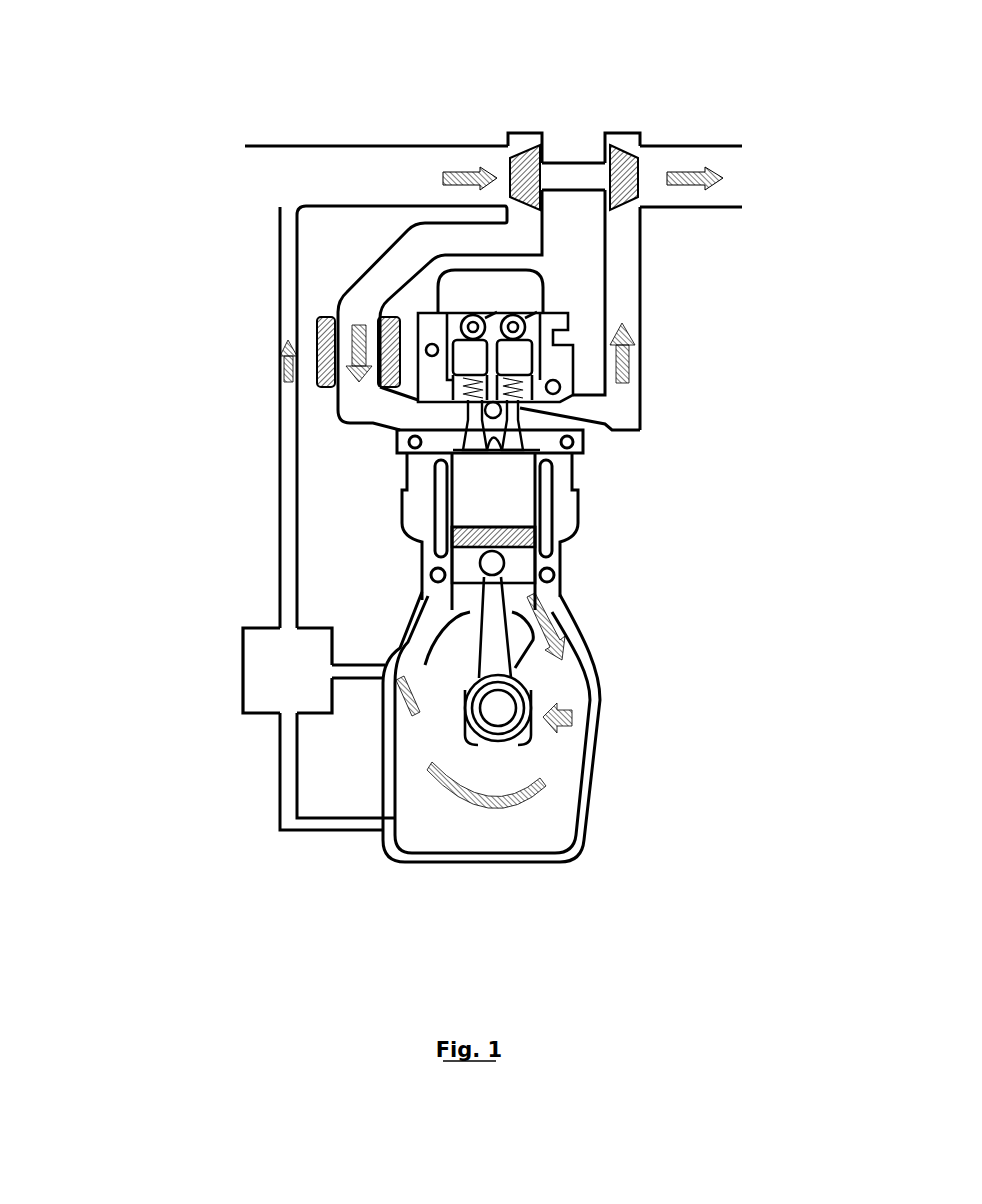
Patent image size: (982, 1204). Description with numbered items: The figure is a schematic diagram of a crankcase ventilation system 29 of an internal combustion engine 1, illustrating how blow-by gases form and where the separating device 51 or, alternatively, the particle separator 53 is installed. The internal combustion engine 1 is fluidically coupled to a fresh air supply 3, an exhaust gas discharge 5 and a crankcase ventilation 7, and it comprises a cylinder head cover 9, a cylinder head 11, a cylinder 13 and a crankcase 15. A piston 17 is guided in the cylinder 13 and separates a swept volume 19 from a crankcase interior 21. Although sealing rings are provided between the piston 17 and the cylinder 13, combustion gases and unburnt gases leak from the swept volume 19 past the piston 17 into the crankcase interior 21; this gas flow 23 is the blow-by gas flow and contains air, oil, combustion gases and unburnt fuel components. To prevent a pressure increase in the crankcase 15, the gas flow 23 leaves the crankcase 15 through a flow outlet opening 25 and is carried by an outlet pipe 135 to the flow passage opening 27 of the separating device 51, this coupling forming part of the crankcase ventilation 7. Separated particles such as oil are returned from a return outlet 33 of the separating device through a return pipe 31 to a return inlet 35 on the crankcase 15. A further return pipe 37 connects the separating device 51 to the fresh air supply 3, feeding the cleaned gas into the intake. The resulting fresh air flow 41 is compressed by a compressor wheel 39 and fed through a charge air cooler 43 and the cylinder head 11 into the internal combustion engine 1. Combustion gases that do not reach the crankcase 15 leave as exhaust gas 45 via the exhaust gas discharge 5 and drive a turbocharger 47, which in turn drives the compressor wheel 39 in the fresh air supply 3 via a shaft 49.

The internal combustion engine 1 is at (640, 892).
The fresh air supply 3 is at (367, 124).
The exhaust gas discharge 5 is at (828, 142).
The crankcase ventilation 7 is at (220, 514).
The cylinder head cover 9 is at (548, 292).
The cylinder head 11 is at (573, 363).
The cylinder 13 is at (562, 580).
The crankcase 15 is at (590, 795).
The piston 17 is at (560, 563).
The swept volume 19 is at (507, 500).
The crankcase interior 21 is at (507, 840).
The gas flow 23 is at (577, 717).
The flow outlet opening 25 is at (376, 690).
The flow passage opening 27 is at (347, 666).
The crankcase ventilation system 29 is at (201, 809).
The return pipe 31 is at (280, 790).
The return outlet 33 is at (287, 717).
The return inlet 35 is at (393, 818).
The return pipe 37 is at (280, 266).
The compressor wheel 39 is at (522, 148).
The fresh air flow 41 is at (462, 168).
The charge air cooler 43 is at (326, 316).
The exhaust gas 45 is at (688, 178).
The turbocharger 47 is at (623, 167).
The shaft 49 is at (573, 173).
The separating device 51 is at (199, 670).
The particle separator 53 is at (263, 682).
The outlet pipe 135 is at (347, 682).